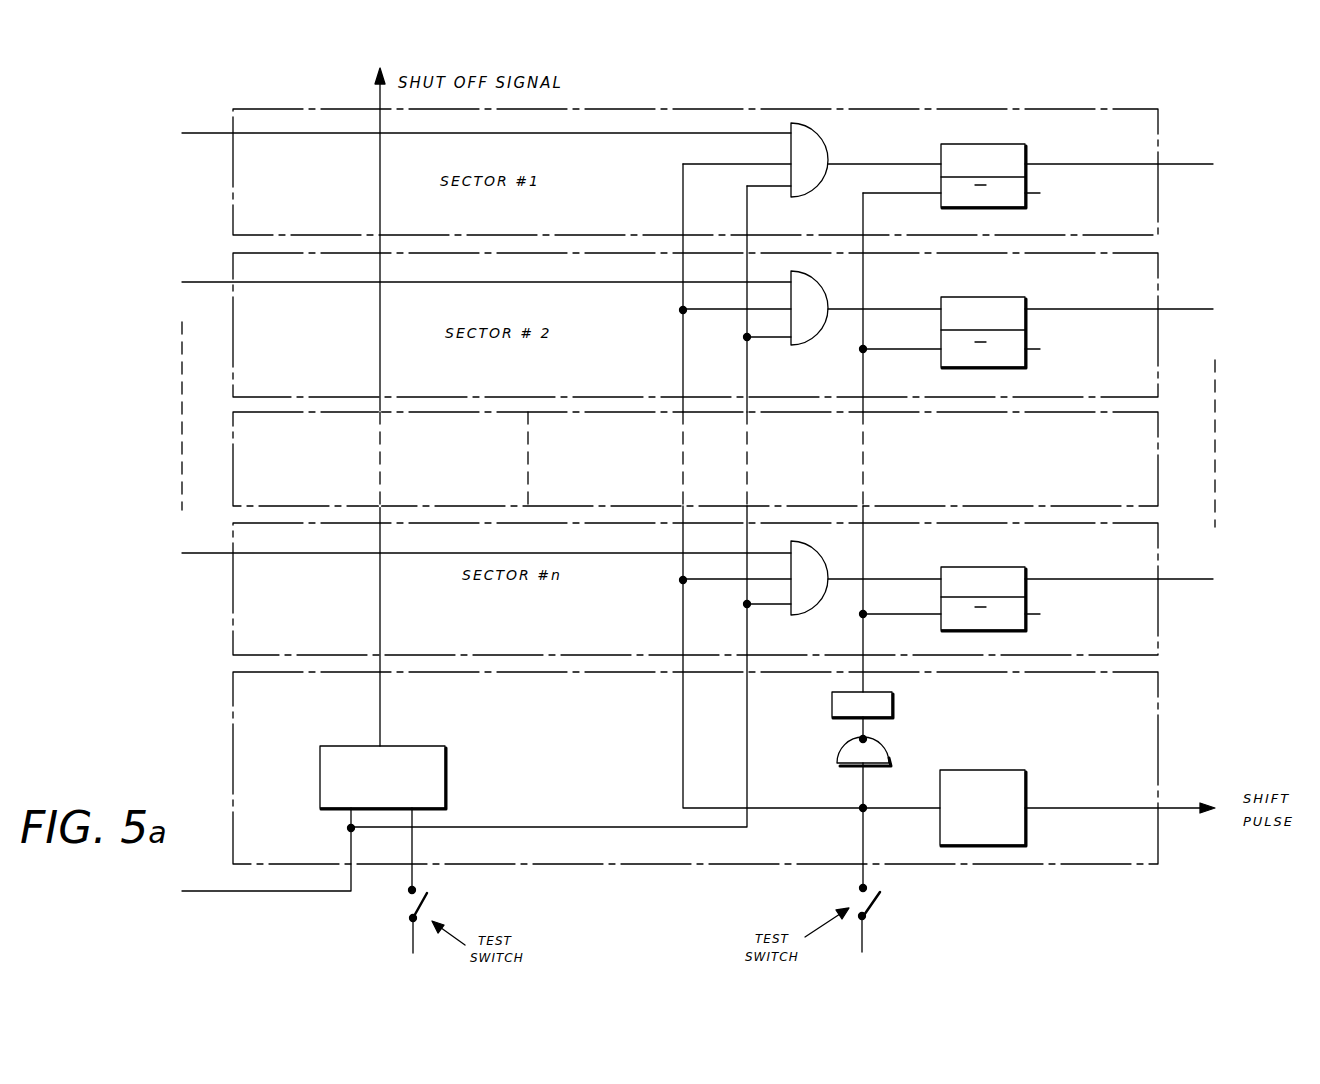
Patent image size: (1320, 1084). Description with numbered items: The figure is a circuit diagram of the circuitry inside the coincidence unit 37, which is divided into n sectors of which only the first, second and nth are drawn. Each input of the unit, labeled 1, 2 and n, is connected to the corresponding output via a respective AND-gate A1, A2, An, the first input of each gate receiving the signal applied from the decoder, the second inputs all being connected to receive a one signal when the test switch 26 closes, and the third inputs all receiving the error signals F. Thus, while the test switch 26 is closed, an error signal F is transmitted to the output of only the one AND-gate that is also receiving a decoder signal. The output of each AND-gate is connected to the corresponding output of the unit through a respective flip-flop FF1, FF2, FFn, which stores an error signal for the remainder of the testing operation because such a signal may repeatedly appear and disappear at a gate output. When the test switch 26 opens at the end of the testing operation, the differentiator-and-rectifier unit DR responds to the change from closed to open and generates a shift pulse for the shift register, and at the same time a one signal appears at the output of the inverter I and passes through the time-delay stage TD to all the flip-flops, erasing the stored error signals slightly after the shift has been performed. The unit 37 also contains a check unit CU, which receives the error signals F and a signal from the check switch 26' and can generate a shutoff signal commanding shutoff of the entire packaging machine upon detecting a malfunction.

The coincidence unit 37 is at (1085, 108).
The AND-gate A1 is at (829, 139).
The AND-gate A2 is at (835, 290).
The AND-gate An is at (838, 555).
The flip-flop FF1 is at (968, 146).
The flip-flop FF2 is at (998, 296).
The flip-flop FFn is at (975, 565).
The time-delay stage TD is at (893, 703).
The inverter I is at (893, 752).
The differentiator-and-rectifier unit DR is at (1013, 770).
The check unit CU is at (431, 746).
The test switch 26 is at (902, 919).
The check switch 26' is at (452, 880).
The first input and output of coincidence unit 1 is at (700, 149).
The second input and output of coincidence unit 2 is at (695, 298).
The nth input and output of coincidence unit n is at (696, 547).
The error signal F is at (263, 867).